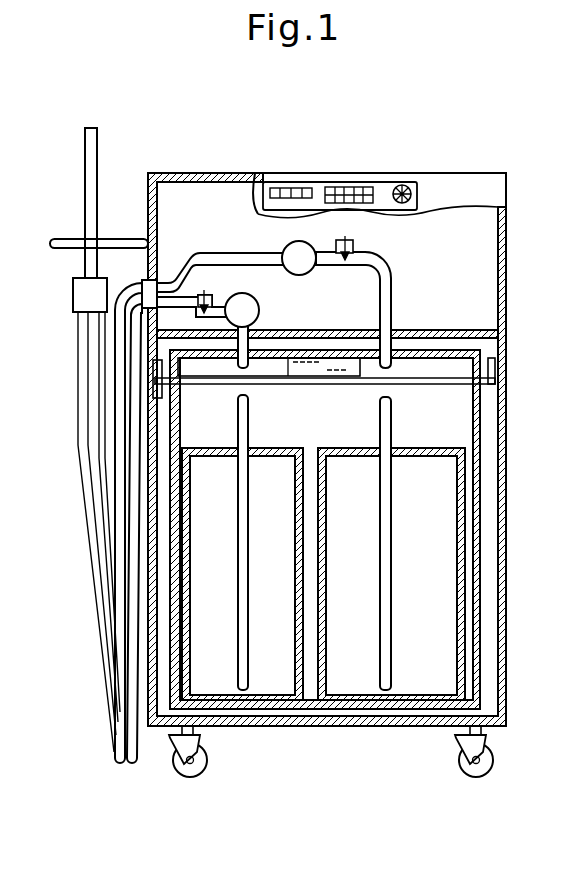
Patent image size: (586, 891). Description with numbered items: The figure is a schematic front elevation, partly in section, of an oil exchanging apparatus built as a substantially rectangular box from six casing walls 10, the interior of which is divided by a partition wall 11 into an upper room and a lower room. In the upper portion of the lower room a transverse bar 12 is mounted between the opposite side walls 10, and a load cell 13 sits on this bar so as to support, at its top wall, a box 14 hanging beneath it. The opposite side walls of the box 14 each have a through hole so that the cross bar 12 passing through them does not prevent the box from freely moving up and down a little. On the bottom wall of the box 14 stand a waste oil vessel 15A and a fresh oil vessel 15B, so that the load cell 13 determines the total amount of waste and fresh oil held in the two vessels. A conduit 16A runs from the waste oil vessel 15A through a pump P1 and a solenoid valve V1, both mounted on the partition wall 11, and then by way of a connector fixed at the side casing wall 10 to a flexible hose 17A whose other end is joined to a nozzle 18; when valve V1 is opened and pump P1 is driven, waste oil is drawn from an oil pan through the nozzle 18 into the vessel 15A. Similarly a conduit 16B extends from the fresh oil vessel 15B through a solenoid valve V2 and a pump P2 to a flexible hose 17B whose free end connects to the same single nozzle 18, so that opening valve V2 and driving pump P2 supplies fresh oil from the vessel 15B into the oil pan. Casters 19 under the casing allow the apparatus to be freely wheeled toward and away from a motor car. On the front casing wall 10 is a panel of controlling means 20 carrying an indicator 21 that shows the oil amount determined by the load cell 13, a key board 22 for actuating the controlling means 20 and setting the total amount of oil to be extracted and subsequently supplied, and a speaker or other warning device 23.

The casing wall 10 is at (148, 188).
The partition wall 11 is at (458, 331).
The transverse bar 12 is at (423, 385).
The load cell 13 is at (300, 378).
The box 14 is at (333, 350).
The waste oil vessel 15A is at (216, 448).
The fresh oil vessel 15B is at (323, 628).
The conduit 16A is at (238, 637).
The conduit 16B is at (391, 671).
The flexible hose 17A is at (130, 606).
The flexible hose 17B is at (115, 577).
The nozzle 18 is at (85, 181).
The casters 19 is at (183, 764).
The panel of controlling means 20 is at (371, 178).
The indicator 21 is at (284, 188).
The key board 22 is at (338, 187).
The warning device 23 is at (403, 185).
The pump P1 is at (259, 310).
The pump P2 is at (285, 250).
The solenoid valve V1 is at (210, 289).
The solenoid valve V2 is at (349, 248).